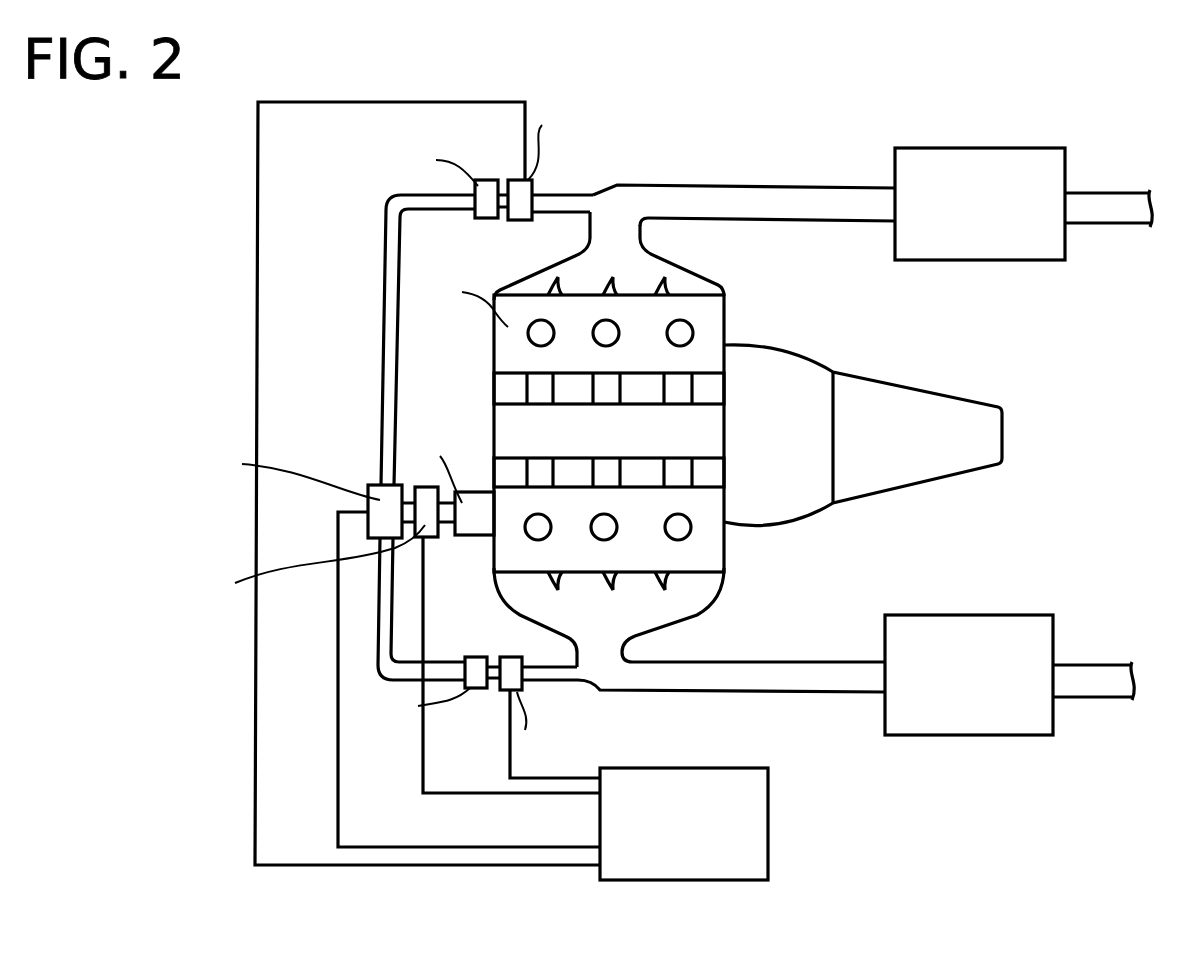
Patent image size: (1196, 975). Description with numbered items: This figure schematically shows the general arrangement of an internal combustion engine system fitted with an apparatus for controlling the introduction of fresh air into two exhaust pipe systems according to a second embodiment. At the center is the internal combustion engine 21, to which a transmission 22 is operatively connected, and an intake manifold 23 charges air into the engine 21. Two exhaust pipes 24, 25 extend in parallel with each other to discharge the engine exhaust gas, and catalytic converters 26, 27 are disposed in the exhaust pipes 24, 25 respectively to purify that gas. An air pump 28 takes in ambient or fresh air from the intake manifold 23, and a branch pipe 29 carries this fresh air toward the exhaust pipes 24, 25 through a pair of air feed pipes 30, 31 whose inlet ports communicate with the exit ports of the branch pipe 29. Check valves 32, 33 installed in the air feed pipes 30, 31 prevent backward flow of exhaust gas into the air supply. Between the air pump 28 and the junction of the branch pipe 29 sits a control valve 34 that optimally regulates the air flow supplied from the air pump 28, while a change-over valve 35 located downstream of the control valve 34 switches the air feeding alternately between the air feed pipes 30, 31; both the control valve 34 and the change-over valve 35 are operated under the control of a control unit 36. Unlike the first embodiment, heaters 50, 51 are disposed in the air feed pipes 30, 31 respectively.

The internal combustion engine 21 is at (707, 312).
The transmission 22 is at (921, 405).
The intake manifold 23 is at (700, 427).
The exhaust pipe 24 is at (787, 185).
The exhaust pipe 25 is at (767, 678).
The catalytic converter 26 is at (978, 148).
The catalytic converter 27 is at (972, 720).
The air pump 28 is at (466, 492).
The branch pipe 29 is at (381, 352).
The air feed pipe 30 is at (575, 195).
The air feed pipe 31 is at (550, 688).
The check valve 32 is at (480, 180).
The check valve 33 is at (478, 688).
The control valve 34 is at (425, 530).
The change-over valve 35 is at (374, 487).
The control unit 36 is at (753, 855).
The heater 50 is at (520, 221).
The heater 51 is at (510, 657).